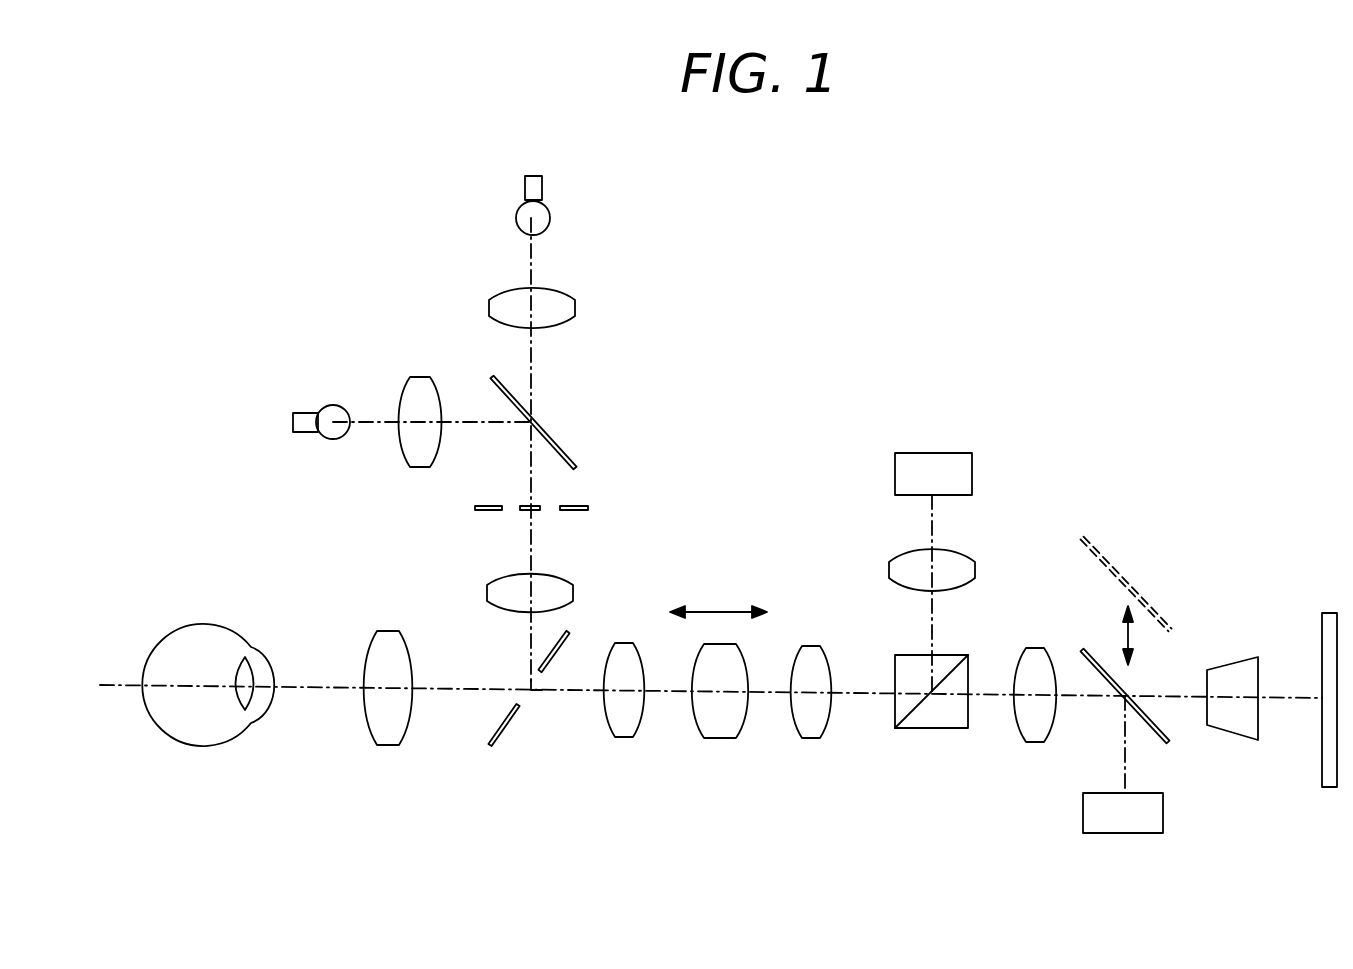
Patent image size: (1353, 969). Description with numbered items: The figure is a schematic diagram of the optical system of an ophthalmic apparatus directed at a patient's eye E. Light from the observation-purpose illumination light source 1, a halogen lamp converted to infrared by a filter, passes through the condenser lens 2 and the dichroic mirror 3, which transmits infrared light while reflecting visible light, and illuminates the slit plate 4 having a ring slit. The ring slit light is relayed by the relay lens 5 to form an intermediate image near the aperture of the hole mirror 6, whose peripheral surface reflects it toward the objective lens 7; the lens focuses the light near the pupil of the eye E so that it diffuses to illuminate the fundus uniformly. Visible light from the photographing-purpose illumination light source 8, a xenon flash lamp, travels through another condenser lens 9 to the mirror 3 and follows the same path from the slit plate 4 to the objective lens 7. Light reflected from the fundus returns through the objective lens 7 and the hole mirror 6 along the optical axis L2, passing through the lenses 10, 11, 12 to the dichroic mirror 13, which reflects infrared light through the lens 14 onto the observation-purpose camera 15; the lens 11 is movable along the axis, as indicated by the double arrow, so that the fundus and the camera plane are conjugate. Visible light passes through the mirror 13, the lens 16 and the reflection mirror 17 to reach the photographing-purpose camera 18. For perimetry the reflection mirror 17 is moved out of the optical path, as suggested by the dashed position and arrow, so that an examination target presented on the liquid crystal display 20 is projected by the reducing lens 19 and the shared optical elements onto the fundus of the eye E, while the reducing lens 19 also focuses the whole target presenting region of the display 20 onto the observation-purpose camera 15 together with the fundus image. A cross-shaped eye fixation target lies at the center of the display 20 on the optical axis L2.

The observation-purpose illumination light source 1 is at (542, 188).
The condenser lens 2 is at (575, 308).
The dichroic mirror 3 is at (575, 460).
The slit plate 4 is at (588, 508).
The relay lens 5 is at (573, 593).
The hole mirror 6 is at (495, 742).
The objective lens 7 is at (388, 630).
The photographing-purpose illumination light source 8 is at (305, 413).
The condenser lens 9 is at (420, 377).
The lens 10 is at (623, 738).
The lens 11 is at (718, 738).
The lens 12 is at (811, 738).
The dichroic mirror 13 is at (930, 728).
The lens 14 is at (889, 570).
The observation-purpose camera 15 is at (895, 472).
The lens 16 is at (1035, 648).
The reflection mirror 17 is at (1086, 654).
The photographing-purpose camera 18 is at (1120, 834).
The reducing lens 19 is at (1235, 662).
The liquid crystal display 20 is at (1322, 620).
The eye to be examined E is at (203, 745).
The optical axis L2 is at (565, 692).